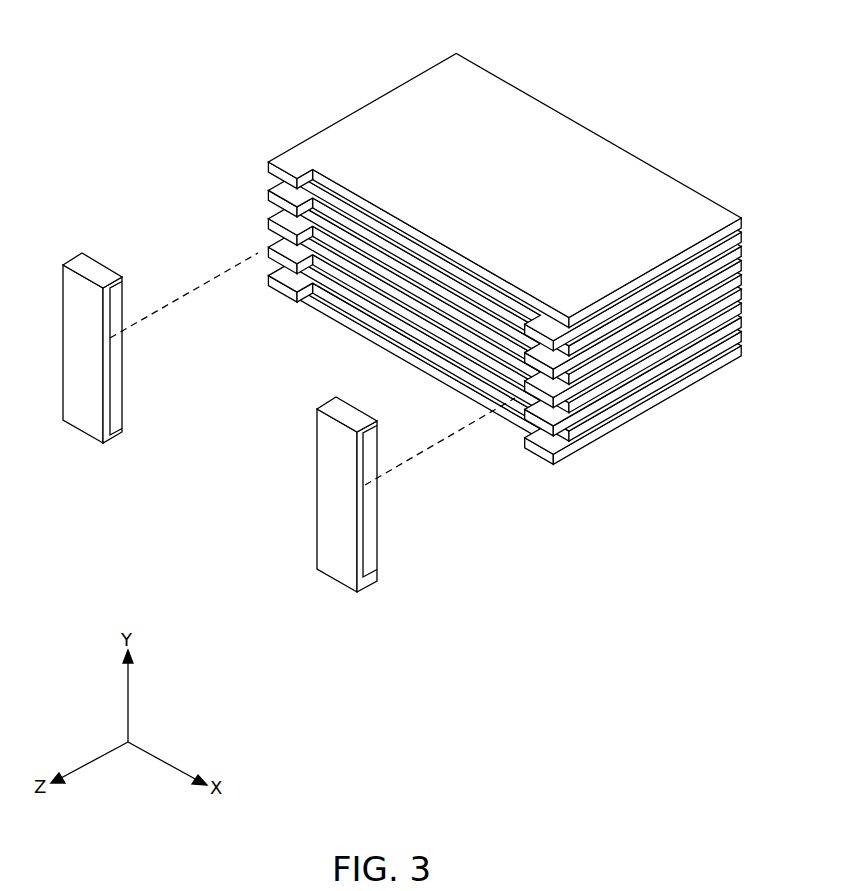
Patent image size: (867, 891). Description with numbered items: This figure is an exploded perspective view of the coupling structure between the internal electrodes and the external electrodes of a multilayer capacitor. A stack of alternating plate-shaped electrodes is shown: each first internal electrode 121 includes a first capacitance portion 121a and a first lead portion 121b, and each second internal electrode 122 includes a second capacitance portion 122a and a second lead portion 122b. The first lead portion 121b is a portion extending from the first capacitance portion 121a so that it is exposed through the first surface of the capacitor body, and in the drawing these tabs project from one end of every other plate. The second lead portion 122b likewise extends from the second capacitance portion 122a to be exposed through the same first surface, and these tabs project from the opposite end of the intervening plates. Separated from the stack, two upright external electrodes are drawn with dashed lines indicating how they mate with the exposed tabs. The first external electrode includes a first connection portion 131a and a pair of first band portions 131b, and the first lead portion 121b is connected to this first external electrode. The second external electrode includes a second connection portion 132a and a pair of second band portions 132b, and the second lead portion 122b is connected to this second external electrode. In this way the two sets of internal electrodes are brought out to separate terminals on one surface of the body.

The first internal electrode 121 is at (494, 176).
The first capacitance portion 121a is at (355, 133).
The first lead portion 121b is at (292, 163).
The second internal electrode 122 is at (540, 269).
The second capacitance portion 122a is at (607, 312).
The second lead portion 122b is at (571, 339).
The first connection portion 131a is at (85, 415).
The first band portion 131b is at (97, 268).
The second connection portion 132a is at (335, 485).
The second band portion 132b is at (333, 405).